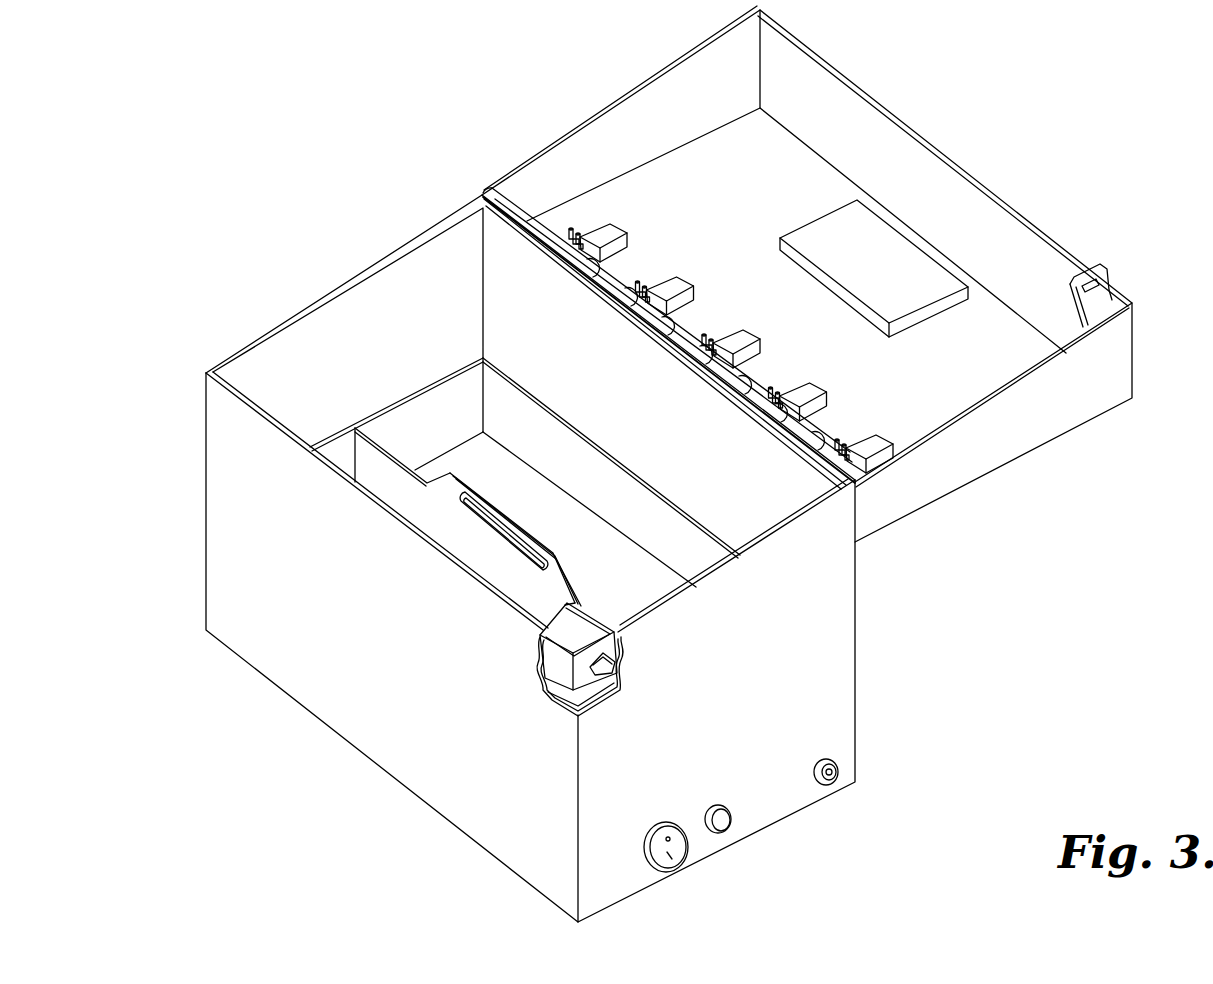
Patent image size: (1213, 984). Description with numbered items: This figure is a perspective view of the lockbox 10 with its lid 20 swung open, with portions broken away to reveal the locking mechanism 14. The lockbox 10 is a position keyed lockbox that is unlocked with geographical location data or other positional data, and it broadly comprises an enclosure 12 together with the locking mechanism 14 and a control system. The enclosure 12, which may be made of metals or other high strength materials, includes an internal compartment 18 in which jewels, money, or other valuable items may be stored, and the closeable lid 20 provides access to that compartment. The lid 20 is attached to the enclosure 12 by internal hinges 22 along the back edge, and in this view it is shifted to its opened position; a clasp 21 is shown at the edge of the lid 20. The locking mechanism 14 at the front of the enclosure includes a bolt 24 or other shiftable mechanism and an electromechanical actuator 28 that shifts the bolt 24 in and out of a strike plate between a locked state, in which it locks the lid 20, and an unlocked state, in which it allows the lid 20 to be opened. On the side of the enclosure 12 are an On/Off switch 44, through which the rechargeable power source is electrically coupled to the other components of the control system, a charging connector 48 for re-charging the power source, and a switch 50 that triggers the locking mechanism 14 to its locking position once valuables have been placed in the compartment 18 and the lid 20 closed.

The lockbox 10 is at (334, 180).
The enclosure 12 is at (470, 834).
The locking mechanism 14 is at (573, 672).
The internal compartment 18 is at (570, 552).
The lid 20 is at (912, 148).
The lid clasp 21 is at (1105, 296).
The internal hinges 22 is at (507, 207).
The bolt 24 is at (606, 660).
The electromechanical actuator 28 is at (556, 622).
The On/Off switch 44 is at (670, 860).
The charging connector 48 is at (838, 771).
The switch 50 is at (728, 828).